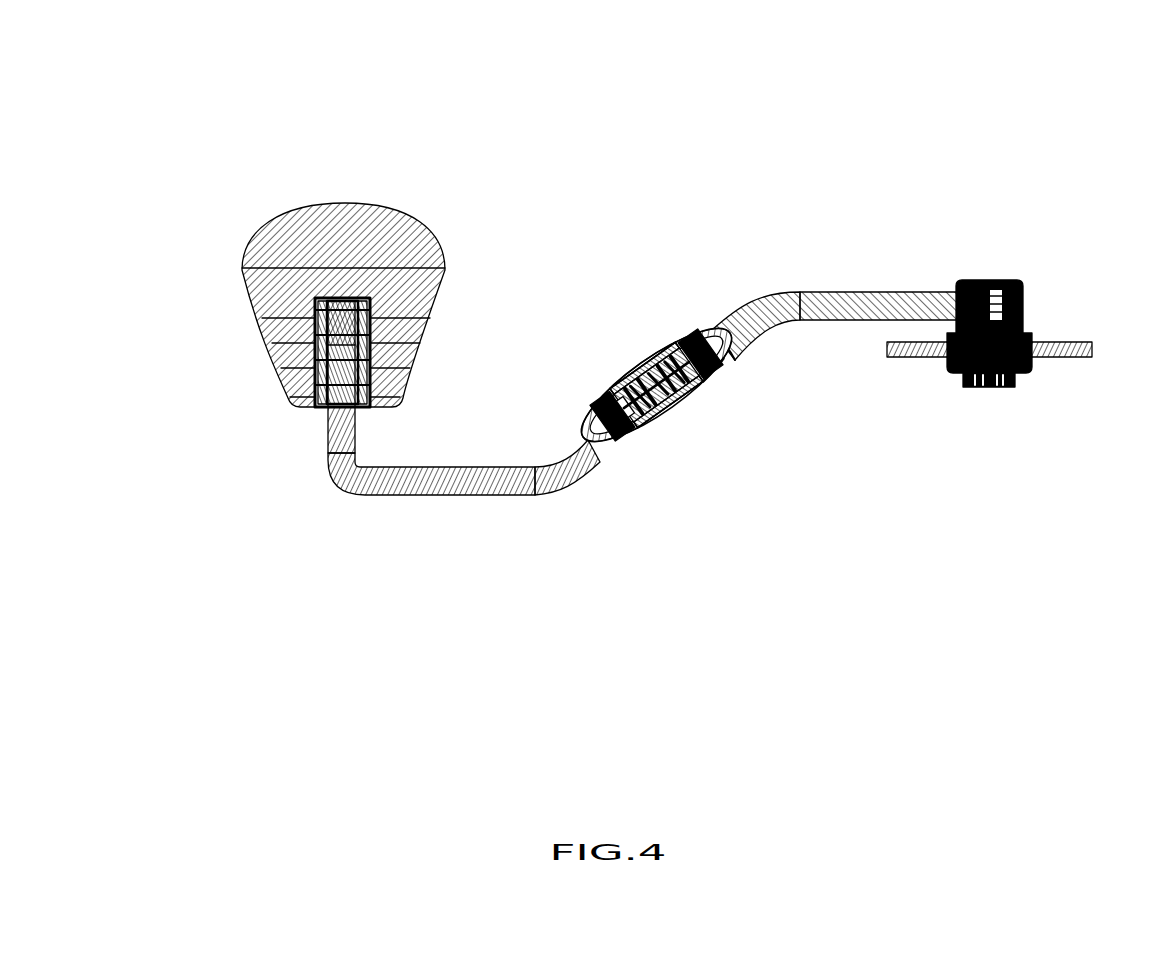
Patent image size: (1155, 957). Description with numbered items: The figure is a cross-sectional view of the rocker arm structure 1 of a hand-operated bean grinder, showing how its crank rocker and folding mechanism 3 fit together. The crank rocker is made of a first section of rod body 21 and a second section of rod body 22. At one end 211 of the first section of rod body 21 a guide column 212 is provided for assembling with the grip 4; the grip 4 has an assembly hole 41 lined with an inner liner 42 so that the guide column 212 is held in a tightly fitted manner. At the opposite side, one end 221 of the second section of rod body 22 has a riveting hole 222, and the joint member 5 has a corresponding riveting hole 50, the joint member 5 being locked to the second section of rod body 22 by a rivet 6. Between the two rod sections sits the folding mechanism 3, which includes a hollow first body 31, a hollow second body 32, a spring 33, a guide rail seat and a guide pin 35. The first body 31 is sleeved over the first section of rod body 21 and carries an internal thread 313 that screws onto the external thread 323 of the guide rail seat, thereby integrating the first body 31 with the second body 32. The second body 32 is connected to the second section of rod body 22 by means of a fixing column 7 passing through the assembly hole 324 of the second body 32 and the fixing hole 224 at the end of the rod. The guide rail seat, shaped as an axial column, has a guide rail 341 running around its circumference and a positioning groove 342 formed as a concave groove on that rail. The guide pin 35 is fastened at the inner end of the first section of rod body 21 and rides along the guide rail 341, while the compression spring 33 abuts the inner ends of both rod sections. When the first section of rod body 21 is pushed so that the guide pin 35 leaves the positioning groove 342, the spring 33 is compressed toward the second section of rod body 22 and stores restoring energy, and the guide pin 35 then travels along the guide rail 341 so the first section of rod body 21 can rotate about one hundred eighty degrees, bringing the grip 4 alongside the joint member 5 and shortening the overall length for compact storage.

The rocker arm structure 1 is at (214, 169).
The folding mechanism 3 is at (653, 172).
The grip 4 is at (348, 206).
The joint member 5 is at (1092, 348).
The rivet 6 is at (1022, 300).
The fixing column 7 is at (723, 393).
The first section of rod body 21 is at (463, 487).
The second section of rod body 22 is at (840, 292).
The first body 31 is at (633, 445).
The second body 32 is at (685, 420).
The spring 33 is at (690, 340).
The guide pin 35 is at (606, 342).
The assembly hole 41 is at (285, 368).
The inner liner 42 is at (275, 332).
The riveting hole 50 is at (960, 318).
The one end of the first section of rod body 211 is at (408, 360).
The guide column 212 is at (343, 298).
The one end of the second section of rod body 221 is at (900, 292).
The riveting hole 222 is at (980, 282).
The fixing hole 224 is at (705, 338).
The internal thread 313 is at (570, 388).
The external thread 323 is at (575, 350).
The assembly hole 324 is at (710, 403).
The guide rail 341 is at (631, 345).
The positioning groove 342 is at (655, 430).